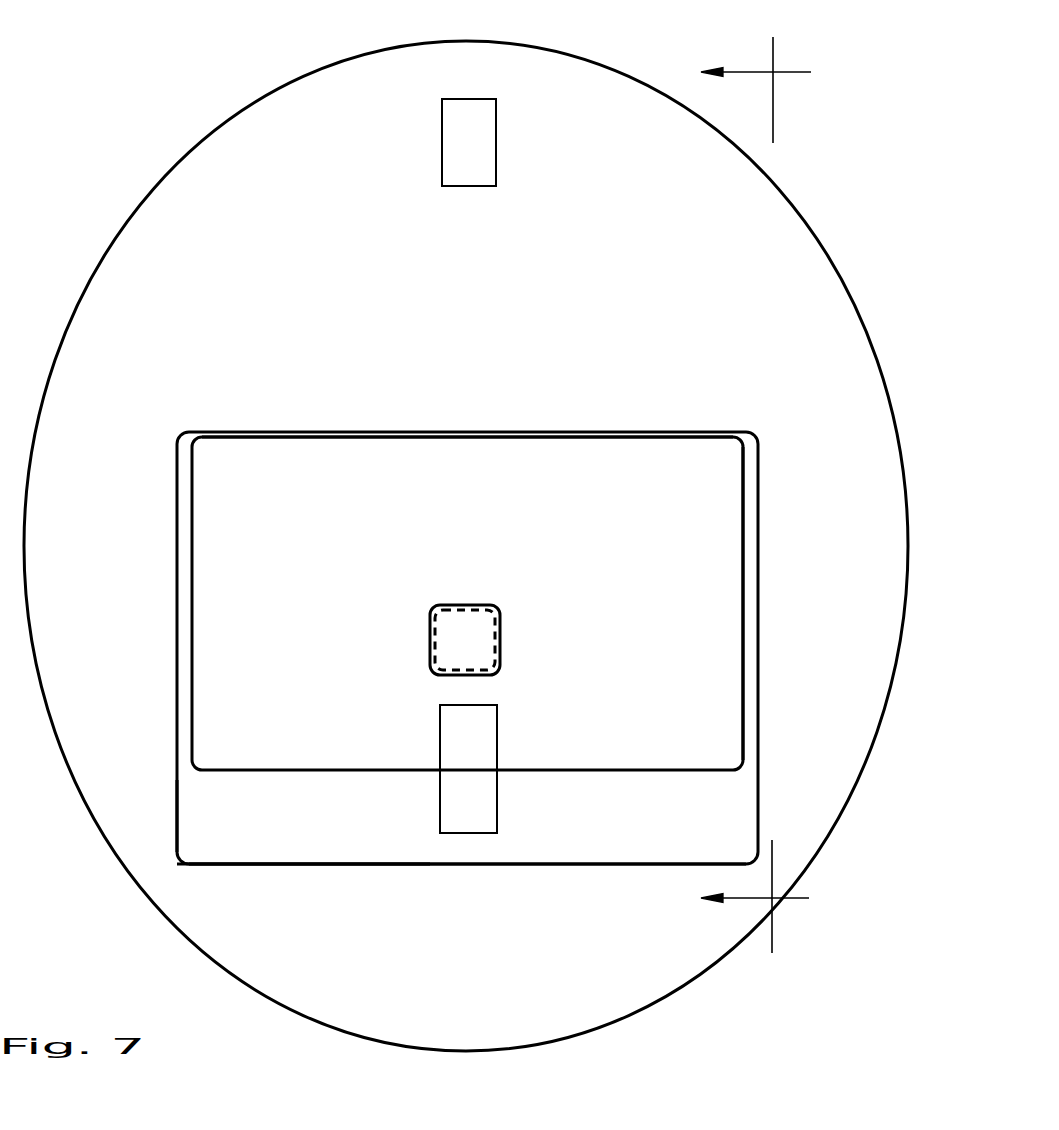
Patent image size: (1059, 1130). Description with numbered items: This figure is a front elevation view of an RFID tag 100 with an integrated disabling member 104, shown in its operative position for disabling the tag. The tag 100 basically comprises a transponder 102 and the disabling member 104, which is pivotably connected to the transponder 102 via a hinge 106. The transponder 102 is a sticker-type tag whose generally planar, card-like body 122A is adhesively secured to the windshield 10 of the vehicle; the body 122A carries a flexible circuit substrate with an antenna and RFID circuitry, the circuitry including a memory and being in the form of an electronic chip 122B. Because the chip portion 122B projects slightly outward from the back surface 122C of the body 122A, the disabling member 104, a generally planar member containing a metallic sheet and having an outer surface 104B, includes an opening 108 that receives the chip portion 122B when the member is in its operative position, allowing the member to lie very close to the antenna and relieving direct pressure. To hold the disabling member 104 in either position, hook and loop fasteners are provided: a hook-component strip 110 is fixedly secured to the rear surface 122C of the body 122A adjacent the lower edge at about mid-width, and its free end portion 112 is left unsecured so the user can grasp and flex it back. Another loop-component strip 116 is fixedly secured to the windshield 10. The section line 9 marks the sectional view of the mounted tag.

The section line 9 is at (756, 494).
The windshield 10 is at (801, 181).
The tag 100 is at (511, 609).
The transponder 102 is at (570, 845).
The disabling member 104 is at (696, 612).
The outer surface 104B is at (688, 493).
The hinge 106 is at (388, 432).
The opening 108 is at (428, 630).
The strip 110 is at (463, 804).
The free end portion 112 is at (482, 720).
The loop element strip 116 is at (465, 140).
The body 122A is at (412, 865).
The chip portion 122B is at (468, 642).
The back surface 122C is at (344, 808).